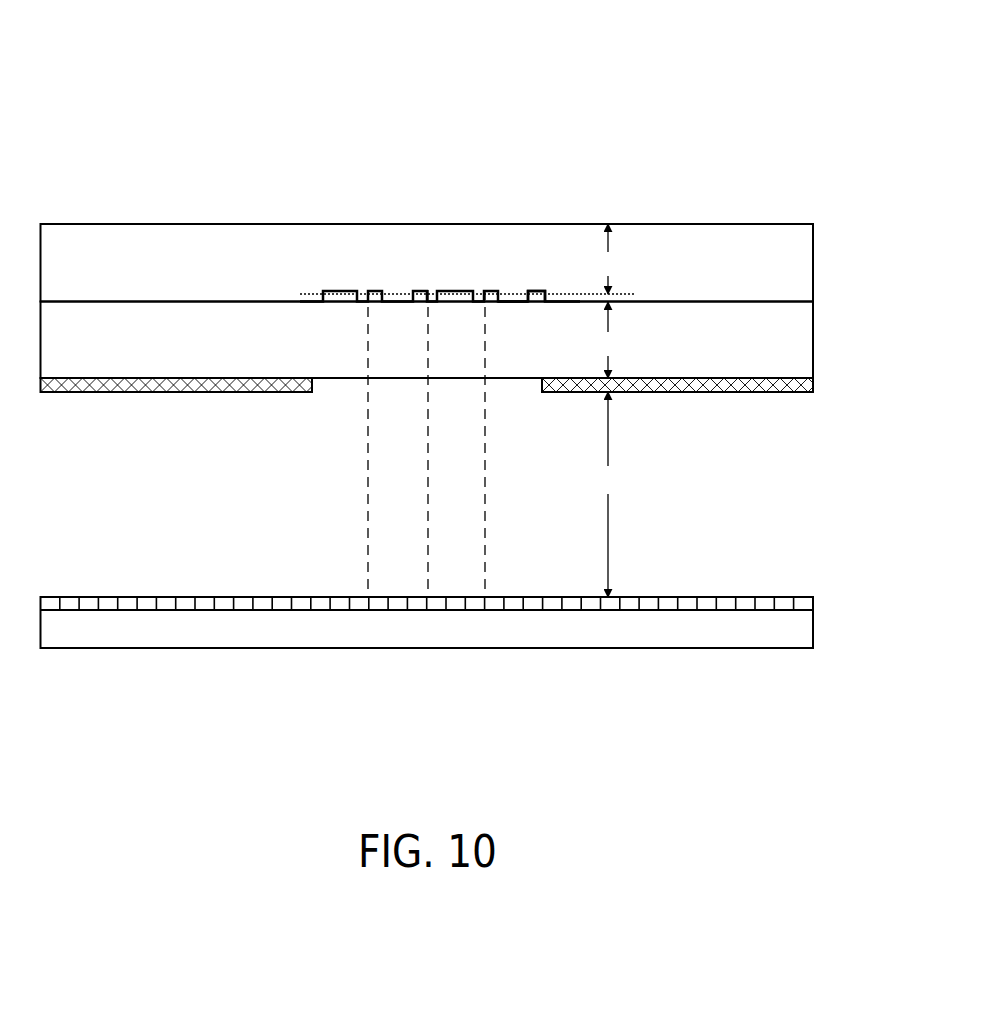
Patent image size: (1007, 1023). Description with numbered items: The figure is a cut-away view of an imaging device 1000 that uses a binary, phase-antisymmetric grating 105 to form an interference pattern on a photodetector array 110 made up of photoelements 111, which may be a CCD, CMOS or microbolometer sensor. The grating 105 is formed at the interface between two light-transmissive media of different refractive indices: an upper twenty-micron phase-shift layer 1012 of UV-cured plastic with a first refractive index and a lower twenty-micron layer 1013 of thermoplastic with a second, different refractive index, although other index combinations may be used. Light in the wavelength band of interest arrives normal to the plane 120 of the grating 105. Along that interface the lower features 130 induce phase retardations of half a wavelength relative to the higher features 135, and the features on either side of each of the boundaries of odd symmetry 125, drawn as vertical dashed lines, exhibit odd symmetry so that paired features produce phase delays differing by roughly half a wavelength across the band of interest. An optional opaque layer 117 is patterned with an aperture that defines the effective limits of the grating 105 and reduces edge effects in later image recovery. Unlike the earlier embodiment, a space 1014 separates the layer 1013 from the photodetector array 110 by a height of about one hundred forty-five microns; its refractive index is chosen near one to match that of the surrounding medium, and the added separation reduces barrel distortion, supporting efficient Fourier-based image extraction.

The imaging device 1000 is at (116, 53).
The phase-shift layer 1012 is at (162, 272).
The layer of thermoplastic 1013 is at (162, 350).
The space 1014 is at (162, 490).
The binary, phase-antisymmetric grating 105 is at (348, 318).
The plane of grating 120 is at (312, 295).
The higher features 135 is at (537, 291).
The lower features 130 is at (522, 302).
The boundaries of odd symmetry 125 is at (427, 453).
The opaque layer 117 is at (148, 393).
The photodetector array 110 is at (522, 644).
The photoelements 111 is at (183, 597).